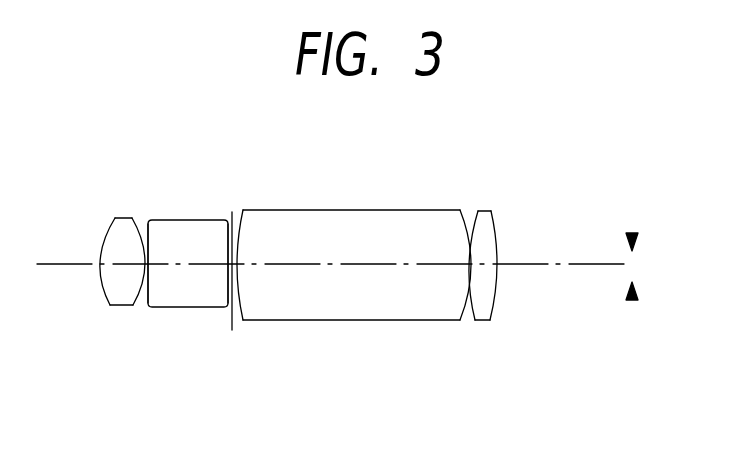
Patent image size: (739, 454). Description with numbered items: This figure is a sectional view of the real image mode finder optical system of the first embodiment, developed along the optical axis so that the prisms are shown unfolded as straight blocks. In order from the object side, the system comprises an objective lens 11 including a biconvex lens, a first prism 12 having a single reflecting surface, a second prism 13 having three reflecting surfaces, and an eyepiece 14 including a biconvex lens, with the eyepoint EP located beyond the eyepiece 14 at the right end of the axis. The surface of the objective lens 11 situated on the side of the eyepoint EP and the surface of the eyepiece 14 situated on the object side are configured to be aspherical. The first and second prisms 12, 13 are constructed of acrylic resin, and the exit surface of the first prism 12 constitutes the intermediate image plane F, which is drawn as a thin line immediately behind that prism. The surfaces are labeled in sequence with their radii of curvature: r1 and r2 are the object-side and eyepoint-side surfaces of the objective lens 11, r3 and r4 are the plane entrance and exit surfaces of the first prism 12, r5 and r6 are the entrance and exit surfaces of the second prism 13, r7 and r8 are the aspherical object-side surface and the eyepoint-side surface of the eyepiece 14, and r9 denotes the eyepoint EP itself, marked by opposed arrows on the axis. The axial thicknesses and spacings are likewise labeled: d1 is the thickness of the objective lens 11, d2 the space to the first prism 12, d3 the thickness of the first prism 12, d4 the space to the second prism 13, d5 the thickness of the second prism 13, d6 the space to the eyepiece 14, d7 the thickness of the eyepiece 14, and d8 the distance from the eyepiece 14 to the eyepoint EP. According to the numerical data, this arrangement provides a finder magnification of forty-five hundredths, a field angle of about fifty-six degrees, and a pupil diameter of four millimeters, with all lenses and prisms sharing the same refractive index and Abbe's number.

The objective lens 11 is at (116, 197).
The first prism 12 is at (188, 208).
The second prism 13 is at (354, 215).
The eyepiece 14 is at (501, 214).
The radius of curvature of first surface r1 is at (104, 230).
The radius of curvature of second surface r2 is at (136, 232).
The radius of curvature of third surface r3 is at (150, 240).
The radius of curvature of fourth surface r4 is at (229, 238).
The radius of curvature of fifth surface r5 is at (243, 232).
The radius of curvature of sixth surface r6 is at (440, 236).
The radius of curvature of seventh surface r7 is at (470, 226).
The radius of curvature of eighth surface r8 is at (519, 244).
The eyepoint surface r9 is at (631, 233).
The thickness of objective lens d1 is at (122, 268).
The space between objective lens and first prism d2 is at (143, 268).
The thickness of first prism d3 is at (192, 270).
The space between first prism and second prism d4 is at (235, 268).
The thickness of second prism d5 is at (353, 266).
The space between second prism and eyepiece d6 is at (470, 270).
The thickness of eyepiece d7 is at (485, 272).
The space between eyepiece and eyepoint d8 is at (563, 268).
The intermediate image plane F is at (231, 280).
The eyepoint EP is at (631, 300).